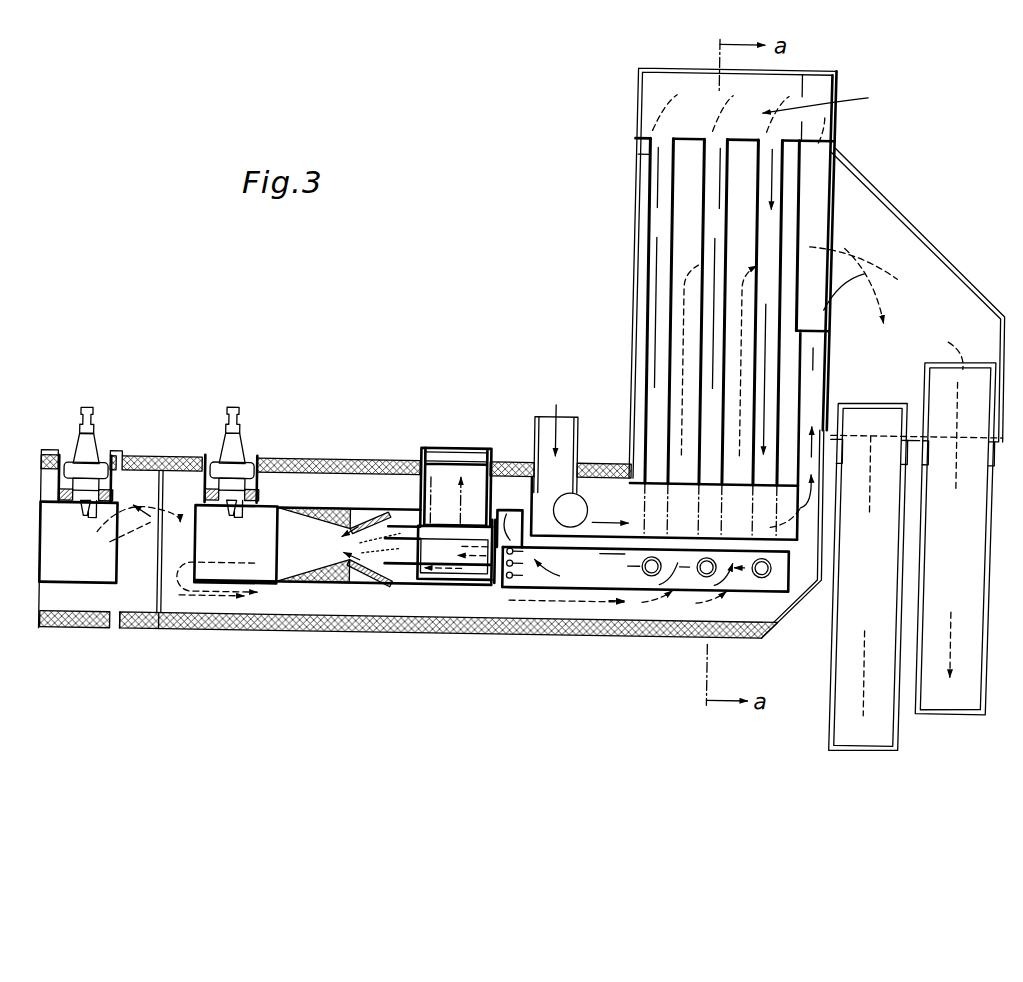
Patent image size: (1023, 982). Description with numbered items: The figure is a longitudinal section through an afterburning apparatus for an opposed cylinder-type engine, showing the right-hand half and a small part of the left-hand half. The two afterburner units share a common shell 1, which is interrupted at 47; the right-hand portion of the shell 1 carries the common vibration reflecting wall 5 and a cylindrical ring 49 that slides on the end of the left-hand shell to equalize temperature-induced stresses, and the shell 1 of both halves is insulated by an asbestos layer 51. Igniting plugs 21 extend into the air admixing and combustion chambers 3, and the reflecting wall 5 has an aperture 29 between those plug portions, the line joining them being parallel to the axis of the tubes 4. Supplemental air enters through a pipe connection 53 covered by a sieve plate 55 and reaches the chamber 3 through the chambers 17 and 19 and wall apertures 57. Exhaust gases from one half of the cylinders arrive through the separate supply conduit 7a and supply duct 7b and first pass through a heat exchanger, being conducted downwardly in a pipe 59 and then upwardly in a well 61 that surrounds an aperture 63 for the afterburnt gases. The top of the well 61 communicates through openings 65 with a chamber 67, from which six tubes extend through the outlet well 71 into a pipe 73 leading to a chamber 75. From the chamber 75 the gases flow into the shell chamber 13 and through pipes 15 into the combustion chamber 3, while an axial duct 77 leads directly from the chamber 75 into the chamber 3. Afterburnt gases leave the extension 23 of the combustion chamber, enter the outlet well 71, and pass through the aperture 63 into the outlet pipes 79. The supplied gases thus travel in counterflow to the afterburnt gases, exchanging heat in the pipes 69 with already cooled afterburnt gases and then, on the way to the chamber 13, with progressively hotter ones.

The common shell 1 is at (77, 630).
The air admixing and combustion chamber 3 is at (70, 573).
The tubes 4 is at (44, 510).
The common vibration reflecting wall 5 is at (163, 547).
The exhaust gas supply conduit 7a is at (567, 429).
The supply duct 7b is at (584, 520).
The shell chamber 13 is at (337, 512).
The pipes 15 is at (380, 515).
The chamber 17 is at (495, 581).
The chamber 19 is at (403, 581).
The igniting plugs 21 is at (92, 437).
The extension of the combustion chamber 23 is at (94, 615).
The aperture 29 is at (157, 512).
The interruption 47 is at (147, 617).
The cylindrical ring 49 is at (143, 462).
The asbestos layer 51 is at (100, 634).
The pipe connection 53 is at (457, 503).
The sieve plate 55 is at (463, 467).
The wall apertures 57 is at (427, 550).
The pipe 59 is at (618, 516).
The well 61 is at (822, 94).
The aperture 63 is at (819, 177).
The openings 65 is at (830, 97).
The chamber 67 is at (748, 111).
The pipes 69 is at (651, 207).
The outlet well 71 is at (698, 213).
The pipe 73 is at (588, 573).
The chamber 75 is at (508, 516).
The axial duct 77 is at (440, 553).
The outlet pipes 79 is at (883, 571).